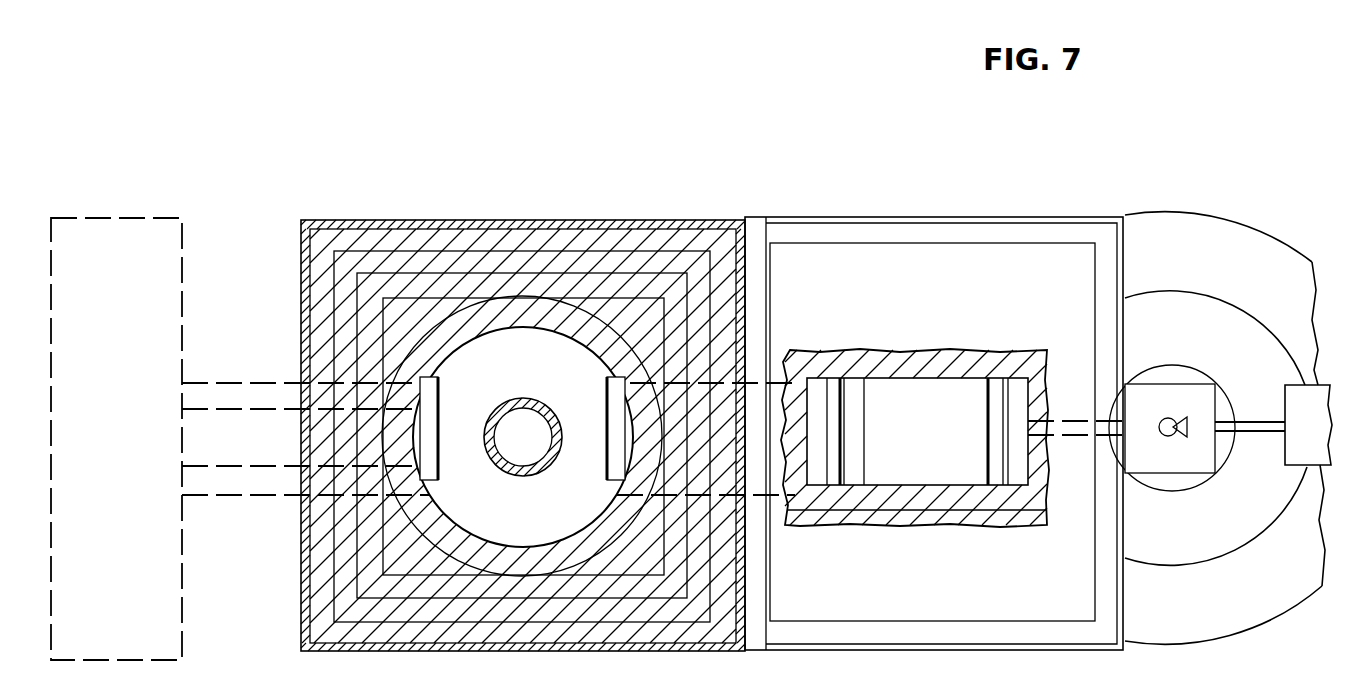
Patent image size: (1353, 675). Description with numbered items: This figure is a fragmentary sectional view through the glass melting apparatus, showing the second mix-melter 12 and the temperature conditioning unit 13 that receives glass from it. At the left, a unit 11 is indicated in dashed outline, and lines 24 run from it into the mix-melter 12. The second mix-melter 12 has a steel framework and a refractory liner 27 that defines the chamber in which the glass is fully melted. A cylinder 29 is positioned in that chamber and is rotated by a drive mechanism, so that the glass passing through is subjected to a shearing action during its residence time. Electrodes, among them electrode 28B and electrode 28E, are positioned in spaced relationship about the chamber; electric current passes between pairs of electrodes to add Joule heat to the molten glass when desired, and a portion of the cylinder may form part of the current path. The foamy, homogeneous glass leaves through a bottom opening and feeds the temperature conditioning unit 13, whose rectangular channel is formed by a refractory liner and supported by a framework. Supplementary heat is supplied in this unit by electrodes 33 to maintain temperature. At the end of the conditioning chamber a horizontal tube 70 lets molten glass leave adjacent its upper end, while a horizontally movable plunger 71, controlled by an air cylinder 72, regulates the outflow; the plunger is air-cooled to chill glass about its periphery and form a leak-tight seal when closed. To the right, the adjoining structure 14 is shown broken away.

The electrical drive unit 11 is at (206, 214).
The second mix-melter 12 is at (568, 194).
The temperature conditioning unit 13 is at (917, 210).
The lens body 14 is at (1194, 660).
The conductors 24 is at (223, 496).
The refractory liner 27 is at (457, 521).
The electrode 28B is at (438, 397).
The electrode 28E is at (606, 410).
The cylinder 29 is at (535, 476).
The electrodes 33 is at (840, 374).
The horizontal tube 70 is at (1075, 418).
The horizontally movable plunger 71 is at (1258, 421).
The air cylinder 72 is at (1290, 385).